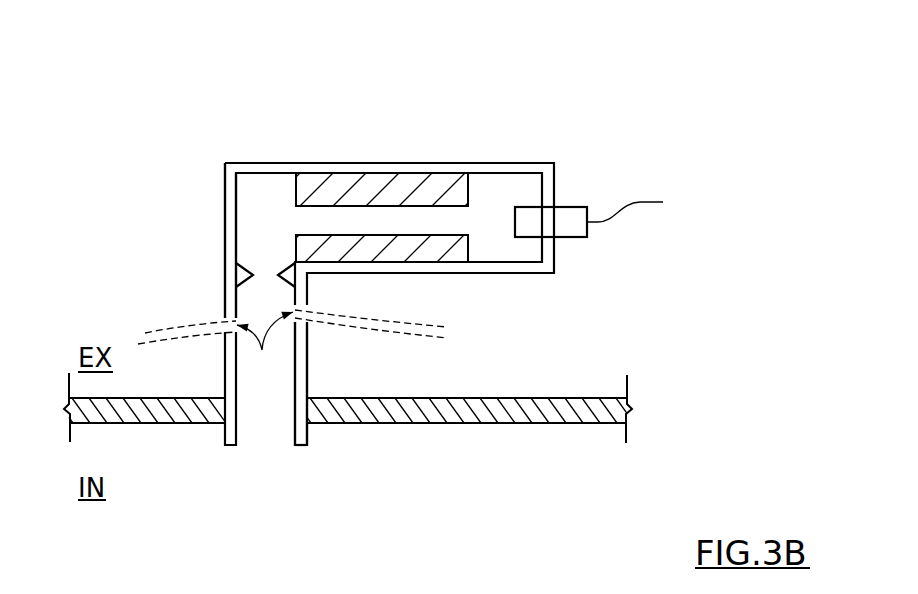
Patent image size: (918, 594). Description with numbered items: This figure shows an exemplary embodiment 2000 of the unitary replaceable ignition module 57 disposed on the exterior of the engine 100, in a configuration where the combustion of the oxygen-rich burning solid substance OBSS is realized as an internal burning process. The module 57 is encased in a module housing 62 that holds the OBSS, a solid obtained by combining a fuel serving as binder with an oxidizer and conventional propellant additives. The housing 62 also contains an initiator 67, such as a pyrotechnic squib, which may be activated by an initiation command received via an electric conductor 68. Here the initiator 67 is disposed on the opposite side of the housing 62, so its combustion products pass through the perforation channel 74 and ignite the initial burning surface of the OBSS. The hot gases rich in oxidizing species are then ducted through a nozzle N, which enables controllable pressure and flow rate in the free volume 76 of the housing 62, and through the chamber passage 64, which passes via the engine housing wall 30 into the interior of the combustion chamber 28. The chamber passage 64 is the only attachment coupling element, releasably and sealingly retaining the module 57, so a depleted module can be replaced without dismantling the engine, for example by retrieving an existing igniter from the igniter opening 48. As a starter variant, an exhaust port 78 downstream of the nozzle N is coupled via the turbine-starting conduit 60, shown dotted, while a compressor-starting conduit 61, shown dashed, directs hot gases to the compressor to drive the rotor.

The exemplary embodiment 2000 is at (568, 97).
The replaceable ignition module 57 is at (155, 93).
The module housing 62 is at (330, 163).
The free volume 76 is at (263, 197).
The oxygen-rich burning solid substance OBSS is at (417, 190).
The perforation channel 74 is at (310, 220).
The nozzle N is at (262, 268).
The initiator 67 is at (567, 222).
The electric conductor 68 is at (642, 202).
The compressor-starting conduit 61 is at (163, 333).
The turbine-starting conduit 60 is at (408, 332).
The exhaust port 78 is at (265, 351).
The chamber passage 64 is at (270, 422).
The igniter opening 48 is at (320, 437).
The combustion chamber 28 is at (287, 500).
The engine 100 is at (592, 398).
The engine housing wall 30 is at (533, 413).